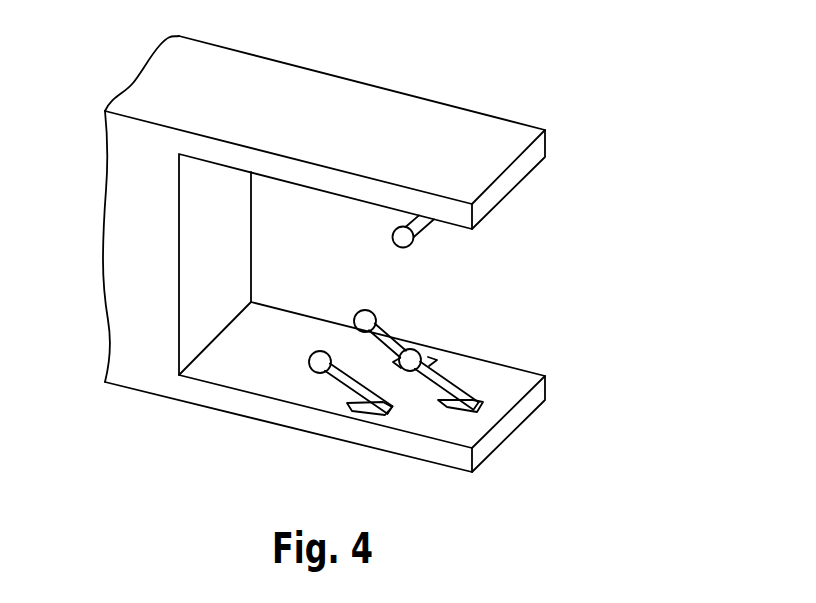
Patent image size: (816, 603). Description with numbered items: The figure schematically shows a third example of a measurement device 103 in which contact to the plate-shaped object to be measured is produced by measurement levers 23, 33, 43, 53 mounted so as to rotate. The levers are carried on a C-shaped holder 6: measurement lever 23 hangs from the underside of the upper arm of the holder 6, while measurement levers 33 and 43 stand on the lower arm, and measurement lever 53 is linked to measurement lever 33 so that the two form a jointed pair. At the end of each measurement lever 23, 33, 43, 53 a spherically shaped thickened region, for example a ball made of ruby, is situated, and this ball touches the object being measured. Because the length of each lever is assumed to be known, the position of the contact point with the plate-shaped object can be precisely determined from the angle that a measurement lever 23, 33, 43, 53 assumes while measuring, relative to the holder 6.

The measurement device 103 is at (608, 65).
The holder 6 is at (117, 280).
The measurement lever 23 is at (405, 240).
The measurement lever 53 is at (363, 317).
The measurement lever 33 is at (412, 358).
The measurement lever 43 is at (318, 362).